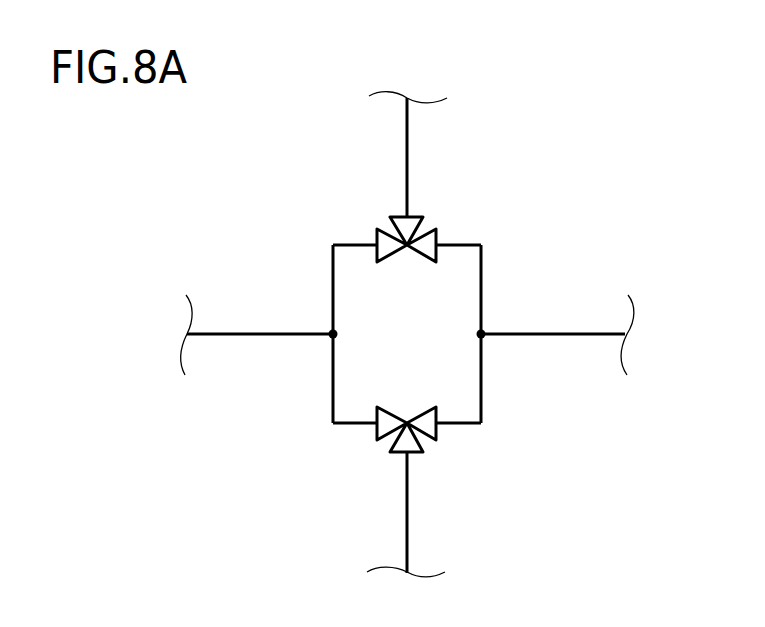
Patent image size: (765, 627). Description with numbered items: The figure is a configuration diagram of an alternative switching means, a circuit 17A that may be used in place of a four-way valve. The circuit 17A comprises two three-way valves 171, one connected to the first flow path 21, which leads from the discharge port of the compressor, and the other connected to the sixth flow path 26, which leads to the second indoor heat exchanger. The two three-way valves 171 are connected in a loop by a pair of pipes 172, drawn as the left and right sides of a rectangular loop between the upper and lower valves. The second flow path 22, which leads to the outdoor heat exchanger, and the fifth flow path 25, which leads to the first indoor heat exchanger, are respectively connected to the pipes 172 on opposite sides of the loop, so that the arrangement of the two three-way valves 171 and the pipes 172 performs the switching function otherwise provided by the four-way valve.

The circuit 17A is at (532, 193).
The three-way valve 171 is at (377, 232).
The pipe 172 is at (333, 291).
The sixth flow path 26 is at (407, 147).
The first flow path 21 is at (407, 518).
The second flow path 22 is at (263, 334).
The fifth flow path 25 is at (553, 334).